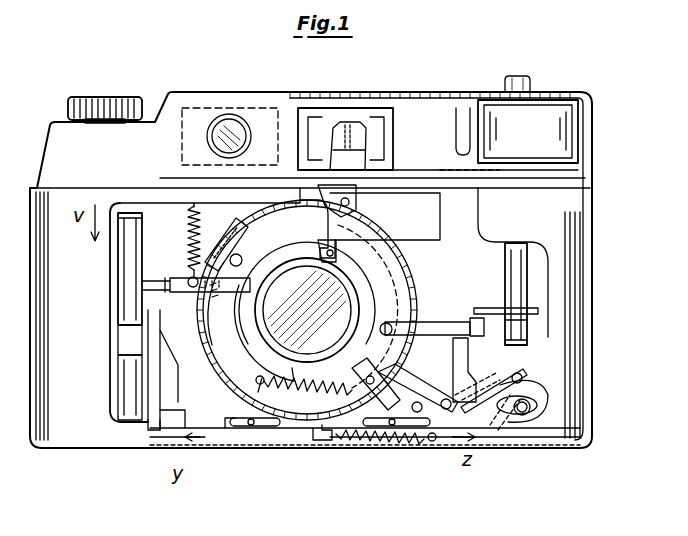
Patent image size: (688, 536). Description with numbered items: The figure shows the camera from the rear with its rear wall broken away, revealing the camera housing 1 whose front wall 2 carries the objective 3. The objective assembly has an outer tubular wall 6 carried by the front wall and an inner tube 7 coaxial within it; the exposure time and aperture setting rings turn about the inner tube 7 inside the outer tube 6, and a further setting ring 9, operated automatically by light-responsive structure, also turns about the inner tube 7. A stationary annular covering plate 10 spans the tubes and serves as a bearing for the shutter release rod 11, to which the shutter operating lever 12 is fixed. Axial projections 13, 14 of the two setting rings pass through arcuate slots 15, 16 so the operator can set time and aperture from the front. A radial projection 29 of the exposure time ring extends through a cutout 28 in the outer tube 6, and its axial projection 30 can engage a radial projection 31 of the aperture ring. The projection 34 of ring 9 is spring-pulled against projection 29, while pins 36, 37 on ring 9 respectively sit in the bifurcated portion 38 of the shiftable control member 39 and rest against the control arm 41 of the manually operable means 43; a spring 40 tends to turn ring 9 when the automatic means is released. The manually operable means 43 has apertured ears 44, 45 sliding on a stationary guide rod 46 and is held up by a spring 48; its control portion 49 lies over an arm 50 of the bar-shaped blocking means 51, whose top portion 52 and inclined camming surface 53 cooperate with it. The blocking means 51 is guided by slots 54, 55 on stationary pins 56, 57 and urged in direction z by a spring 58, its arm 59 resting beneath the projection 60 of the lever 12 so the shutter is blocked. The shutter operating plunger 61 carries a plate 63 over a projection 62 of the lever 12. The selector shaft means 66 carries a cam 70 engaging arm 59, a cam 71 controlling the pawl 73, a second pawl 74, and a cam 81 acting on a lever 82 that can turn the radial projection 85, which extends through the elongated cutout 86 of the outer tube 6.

The camera housing 1 is at (566, 205).
The front wall 2 is at (405, 212).
The objective 3 is at (340, 299).
The outer tubular wall 6 is at (283, 180).
The inner tube 7 is at (302, 266).
The setting ring 9 is at (240, 362).
The covering plate 10 is at (213, 430).
The shutter release rod 11 is at (386, 368).
The lever 12 is at (455, 322).
The axial projection 13 is at (262, 166).
The axial projection 14 is at (408, 283).
The arcuate slot 15 is at (240, 166).
The arcuate slot 16 is at (402, 270).
The cutout 28 is at (207, 333).
The radial projection 29 is at (192, 247).
The axial projection 30 is at (188, 280).
The radial projection 31 is at (205, 292).
The projection 34 is at (233, 242).
The pin 36 is at (342, 245).
The pin 37 is at (243, 262).
The bifurcated portion 38 is at (323, 248).
The control member 39 is at (432, 203).
The spring 40 is at (288, 394).
The control arm 41 is at (218, 297).
The manually operable means 43 is at (148, 283).
The apertured ear 44 is at (120, 222).
The apertured ear 45 is at (125, 330).
The guide rod 46 is at (130, 400).
The spring 48 is at (190, 215).
The control portion 49 is at (170, 286).
The arm 50 is at (152, 367).
The blocking means 51 is at (310, 430).
The horizontally extending portion 52 is at (146, 418).
The inclined camming surface 53 is at (158, 422).
The slot 54 is at (234, 430).
The slot 55 is at (418, 430).
The stationary pin 56 is at (251, 427).
The stationary pin 57 is at (393, 428).
The spring 58 is at (325, 441).
The arm 59 is at (468, 358).
The projection 60 is at (518, 343).
The shutter operating plunger 61 is at (522, 257).
The projection 62 is at (522, 322).
The plate 63 is at (492, 303).
The shaft means 66 is at (526, 413).
The cam 70 is at (508, 418).
The cam 71 is at (541, 387).
The pawl 73 is at (378, 443).
The pawl 74 is at (528, 364).
The cam 81 is at (551, 407).
The lever 82 is at (438, 442).
The radial projection 85 is at (400, 383).
The cutout 86 is at (440, 324).